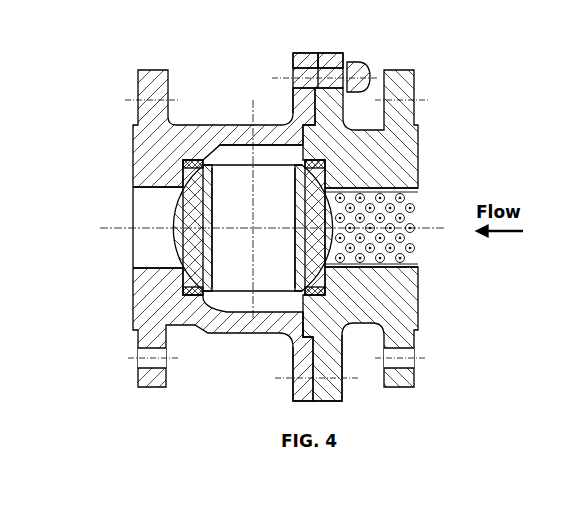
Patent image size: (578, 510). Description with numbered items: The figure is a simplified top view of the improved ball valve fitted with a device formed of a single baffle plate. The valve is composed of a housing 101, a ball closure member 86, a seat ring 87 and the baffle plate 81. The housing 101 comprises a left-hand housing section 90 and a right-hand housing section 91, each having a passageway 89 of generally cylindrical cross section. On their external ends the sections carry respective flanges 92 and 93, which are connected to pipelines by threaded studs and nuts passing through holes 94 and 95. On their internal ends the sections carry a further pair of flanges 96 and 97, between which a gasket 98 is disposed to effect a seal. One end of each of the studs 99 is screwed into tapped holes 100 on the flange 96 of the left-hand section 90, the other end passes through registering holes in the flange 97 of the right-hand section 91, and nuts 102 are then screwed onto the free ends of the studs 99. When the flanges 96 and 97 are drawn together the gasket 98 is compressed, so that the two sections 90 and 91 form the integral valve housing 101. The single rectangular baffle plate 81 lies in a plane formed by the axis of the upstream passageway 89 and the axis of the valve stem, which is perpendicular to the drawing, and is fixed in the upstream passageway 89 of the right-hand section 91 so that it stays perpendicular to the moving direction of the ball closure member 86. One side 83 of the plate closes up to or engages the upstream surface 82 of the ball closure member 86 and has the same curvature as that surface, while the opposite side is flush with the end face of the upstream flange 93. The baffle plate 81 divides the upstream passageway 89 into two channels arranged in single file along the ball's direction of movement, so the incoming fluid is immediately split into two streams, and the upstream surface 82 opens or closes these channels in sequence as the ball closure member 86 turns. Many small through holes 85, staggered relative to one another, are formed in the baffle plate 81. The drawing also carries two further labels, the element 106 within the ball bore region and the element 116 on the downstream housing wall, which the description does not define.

The baffle plate 81 is at (420, 248).
The upstream surface 82 is at (253, 228).
The side 83 is at (421, 318).
The through holes 85 is at (423, 277).
The ball closure member 86 is at (178, 210).
The seat ring 87 is at (185, 285).
The passageways 89 is at (153, 238).
The left-hand housing section 90 is at (212, 124).
The right-hand housing section 91 is at (305, 350).
The flange 92 is at (137, 118).
The flange 93 is at (402, 90).
The holes 94 is at (137, 366).
The holes 95 is at (412, 372).
The flange 96 is at (303, 388).
The flange 97 is at (343, 401).
The gasket 98 is at (305, 118).
The studs 99 is at (327, 53).
The tapped holes 100 is at (297, 53).
The housing 101 is at (333, 54).
The nuts 102 is at (357, 68).
The stem cavity 106 is at (261, 175).
The downstream passage wall 116 is at (420, 172).